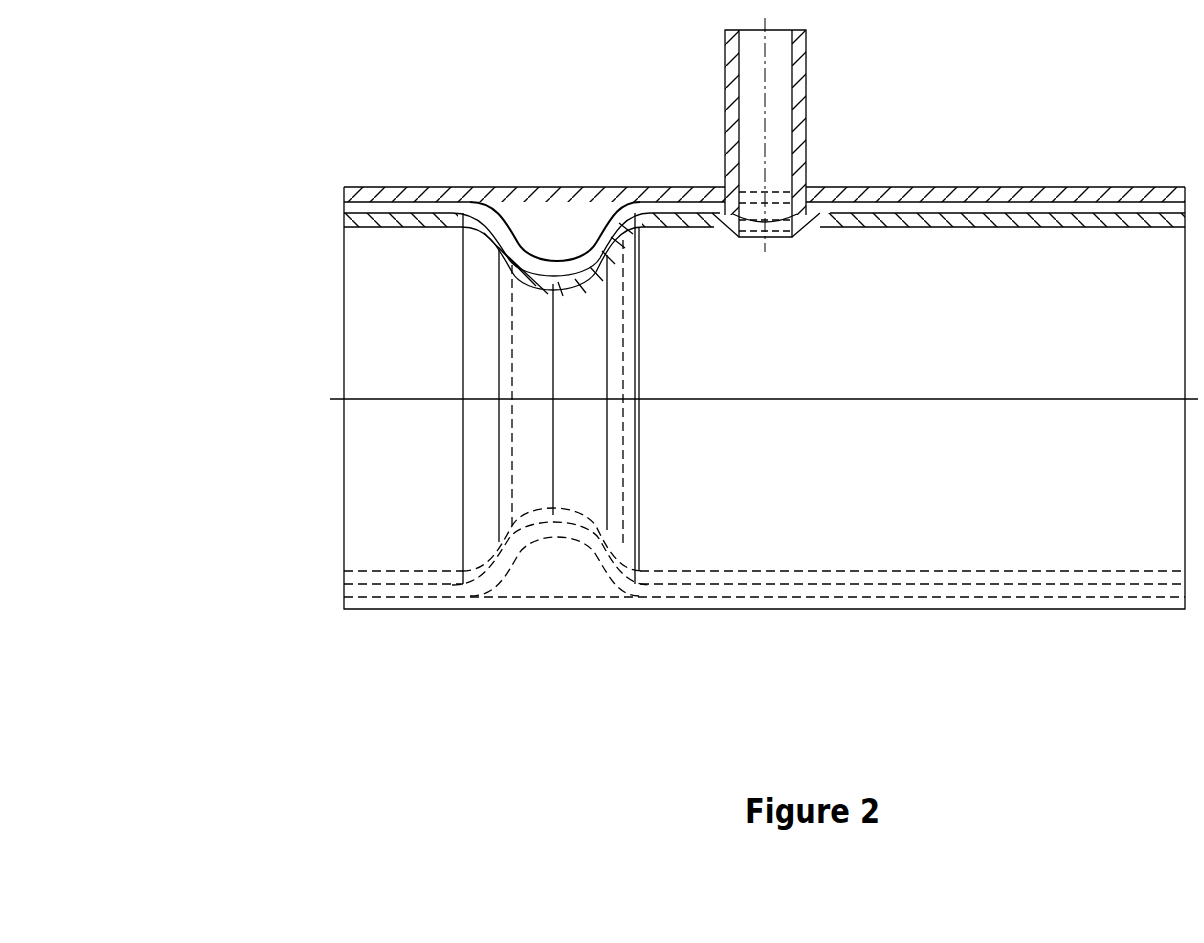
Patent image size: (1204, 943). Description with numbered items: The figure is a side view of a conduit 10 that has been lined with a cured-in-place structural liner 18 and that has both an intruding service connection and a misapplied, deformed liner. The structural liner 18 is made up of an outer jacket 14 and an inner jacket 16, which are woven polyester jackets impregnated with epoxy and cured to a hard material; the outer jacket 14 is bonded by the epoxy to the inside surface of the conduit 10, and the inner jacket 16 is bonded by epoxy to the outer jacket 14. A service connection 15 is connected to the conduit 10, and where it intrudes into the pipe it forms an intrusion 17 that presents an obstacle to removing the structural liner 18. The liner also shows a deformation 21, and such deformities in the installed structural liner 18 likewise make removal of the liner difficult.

The conduit 10 is at (478, 111).
The outer jacket 14 is at (344, 206).
The service connection 15 is at (807, 87).
The inner jacket 16 is at (344, 222).
The intrusion 17 is at (803, 228).
The structural liner 18 is at (242, 88).
The deformation 21 is at (585, 287).